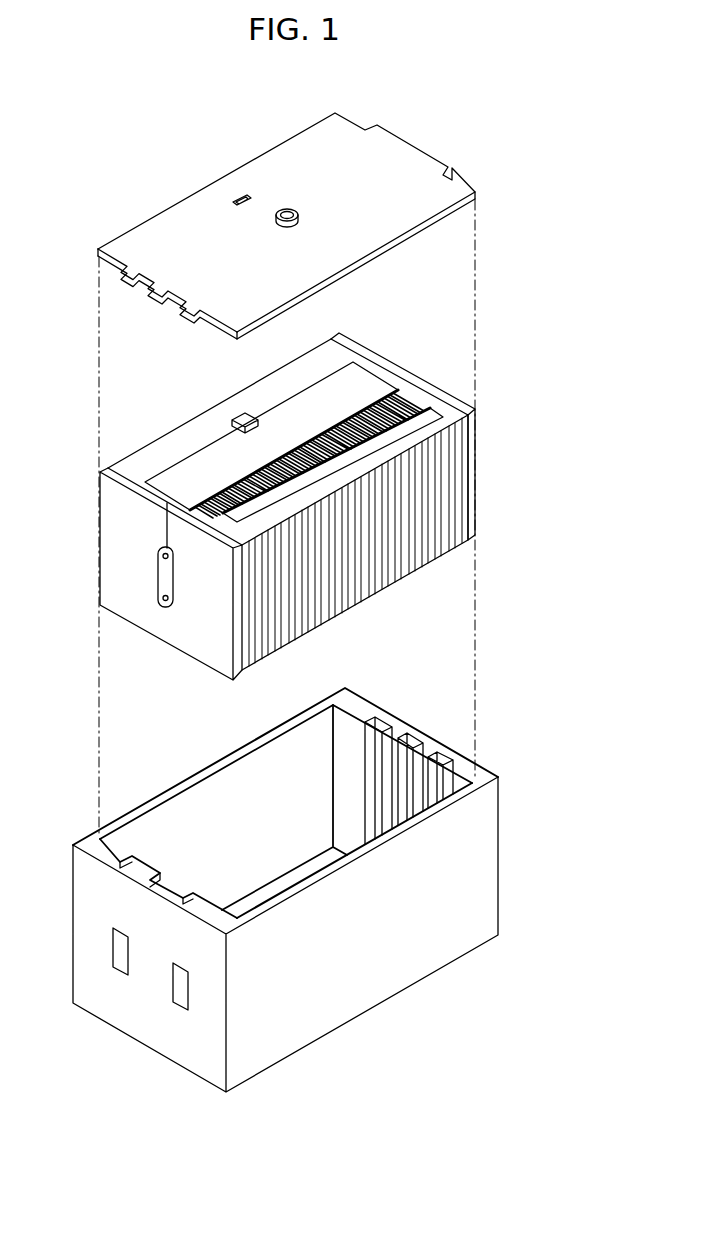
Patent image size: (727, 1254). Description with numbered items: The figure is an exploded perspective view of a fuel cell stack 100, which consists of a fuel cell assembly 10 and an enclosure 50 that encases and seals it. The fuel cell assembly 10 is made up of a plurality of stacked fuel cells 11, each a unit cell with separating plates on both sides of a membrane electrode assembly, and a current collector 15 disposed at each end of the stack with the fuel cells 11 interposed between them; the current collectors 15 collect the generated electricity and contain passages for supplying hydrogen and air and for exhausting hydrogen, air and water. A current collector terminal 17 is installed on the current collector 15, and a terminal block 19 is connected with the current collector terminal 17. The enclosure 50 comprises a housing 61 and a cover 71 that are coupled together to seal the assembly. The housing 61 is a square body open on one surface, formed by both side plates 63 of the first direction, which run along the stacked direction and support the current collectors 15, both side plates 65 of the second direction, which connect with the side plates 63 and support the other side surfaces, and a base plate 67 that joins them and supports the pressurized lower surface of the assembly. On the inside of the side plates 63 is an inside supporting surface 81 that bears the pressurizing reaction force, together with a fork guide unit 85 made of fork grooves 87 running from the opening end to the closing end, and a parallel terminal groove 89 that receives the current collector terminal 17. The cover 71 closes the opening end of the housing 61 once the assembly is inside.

The fuel cell stack 100 is at (174, 96).
The cover 71 is at (138, 232).
The fuel cell assembly 10 is at (488, 445).
The fuel cell 11 is at (168, 448).
The current collector 15 is at (425, 385).
The current collector terminal 17 is at (160, 573).
The terminal block 19 is at (231, 420).
The enclosure 50 is at (518, 768).
The housing 61 is at (511, 868).
The side plate of first direction 63 is at (363, 695).
The side plate of second direction 65 is at (178, 780).
The base plate 67 is at (285, 887).
The inside supporting surface 81 is at (340, 739).
The fork guide unit 85 is at (367, 771).
The fork groove 87 is at (383, 723).
The terminal groove 89 is at (412, 740).